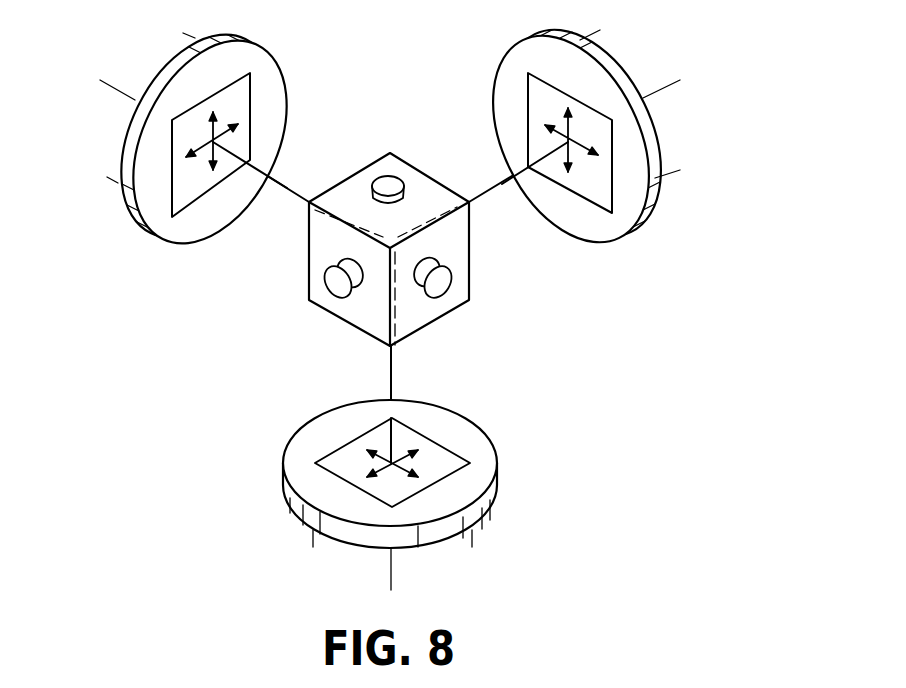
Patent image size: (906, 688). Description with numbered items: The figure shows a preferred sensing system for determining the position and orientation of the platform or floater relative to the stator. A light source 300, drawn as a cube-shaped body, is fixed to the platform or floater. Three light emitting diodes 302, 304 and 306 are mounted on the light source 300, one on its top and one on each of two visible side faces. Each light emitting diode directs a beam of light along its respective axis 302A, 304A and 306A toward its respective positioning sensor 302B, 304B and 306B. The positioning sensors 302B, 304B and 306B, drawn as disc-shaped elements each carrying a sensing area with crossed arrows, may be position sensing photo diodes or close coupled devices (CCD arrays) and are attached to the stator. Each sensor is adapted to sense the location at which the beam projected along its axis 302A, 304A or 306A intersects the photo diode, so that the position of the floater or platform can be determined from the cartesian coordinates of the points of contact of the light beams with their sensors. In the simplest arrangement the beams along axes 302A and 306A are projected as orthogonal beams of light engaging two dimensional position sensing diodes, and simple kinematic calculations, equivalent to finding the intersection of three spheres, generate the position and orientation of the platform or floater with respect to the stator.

The light source 300 is at (377, 168).
The light emitting diode 302 is at (395, 186).
The axis 302A is at (391, 363).
The positioning sensor 302B is at (497, 477).
The light emitting diode 304 is at (448, 277).
The axis 304A is at (287, 188).
The positioning sensor 304B is at (258, 45).
The light emitting diode 306 is at (330, 283).
The axis 306A is at (502, 186).
The positioning sensor 306B is at (660, 213).